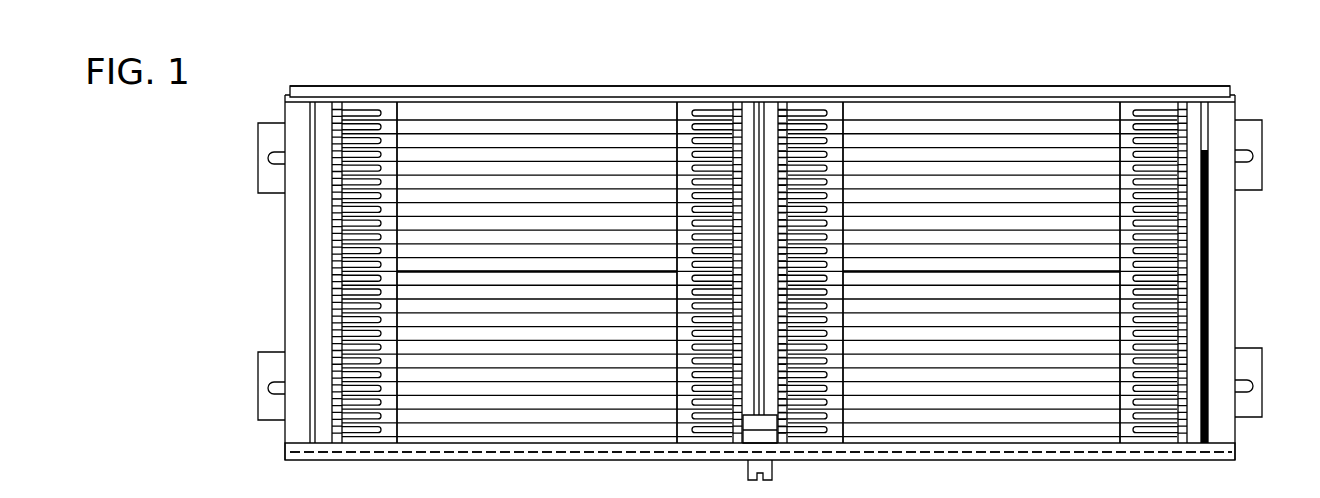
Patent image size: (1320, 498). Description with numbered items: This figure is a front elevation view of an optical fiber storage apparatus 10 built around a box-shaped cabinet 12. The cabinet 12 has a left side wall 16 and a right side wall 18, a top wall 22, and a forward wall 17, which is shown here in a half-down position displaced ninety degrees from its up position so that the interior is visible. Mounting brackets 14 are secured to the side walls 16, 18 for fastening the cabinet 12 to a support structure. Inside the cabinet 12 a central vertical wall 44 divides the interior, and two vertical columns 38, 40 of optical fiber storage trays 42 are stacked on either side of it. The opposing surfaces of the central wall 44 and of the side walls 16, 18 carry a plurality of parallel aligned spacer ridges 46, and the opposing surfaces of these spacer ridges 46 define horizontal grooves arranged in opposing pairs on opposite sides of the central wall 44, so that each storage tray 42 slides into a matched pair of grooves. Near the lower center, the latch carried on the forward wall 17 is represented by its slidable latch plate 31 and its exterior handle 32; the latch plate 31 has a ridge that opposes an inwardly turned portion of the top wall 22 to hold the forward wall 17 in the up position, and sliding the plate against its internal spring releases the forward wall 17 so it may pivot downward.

The optical fiber storage apparatus 10 is at (500, 86).
The cabinet 12 is at (577, 88).
The mounting brackets 14 is at (265, 147).
The side wall 16 is at (307, 278).
The forward wall 17 is at (350, 445).
The side wall 18 is at (1210, 231).
The top wall 22 is at (948, 84).
The latch plate 31 is at (757, 437).
The exterior handle 32 is at (763, 480).
The first vertical column of storage trays 38 is at (428, 118).
The second vertical column of storage trays 40 is at (947, 130).
The optical fiber storage trays 42 is at (420, 210).
The central vertical wall 44 is at (765, 140).
The spacer ridges 46 is at (335, 117).